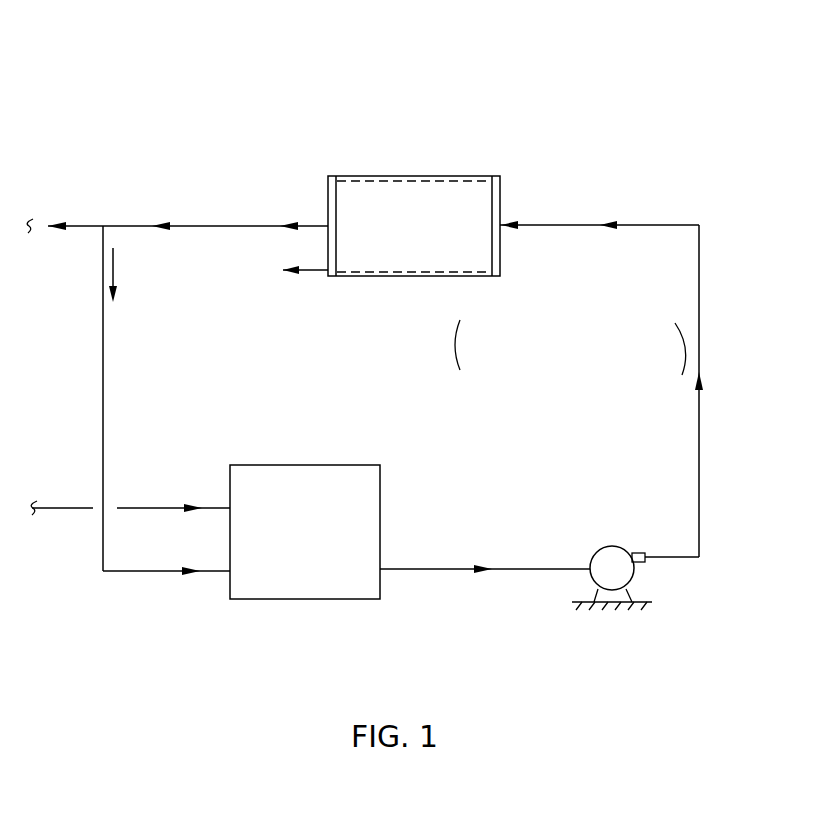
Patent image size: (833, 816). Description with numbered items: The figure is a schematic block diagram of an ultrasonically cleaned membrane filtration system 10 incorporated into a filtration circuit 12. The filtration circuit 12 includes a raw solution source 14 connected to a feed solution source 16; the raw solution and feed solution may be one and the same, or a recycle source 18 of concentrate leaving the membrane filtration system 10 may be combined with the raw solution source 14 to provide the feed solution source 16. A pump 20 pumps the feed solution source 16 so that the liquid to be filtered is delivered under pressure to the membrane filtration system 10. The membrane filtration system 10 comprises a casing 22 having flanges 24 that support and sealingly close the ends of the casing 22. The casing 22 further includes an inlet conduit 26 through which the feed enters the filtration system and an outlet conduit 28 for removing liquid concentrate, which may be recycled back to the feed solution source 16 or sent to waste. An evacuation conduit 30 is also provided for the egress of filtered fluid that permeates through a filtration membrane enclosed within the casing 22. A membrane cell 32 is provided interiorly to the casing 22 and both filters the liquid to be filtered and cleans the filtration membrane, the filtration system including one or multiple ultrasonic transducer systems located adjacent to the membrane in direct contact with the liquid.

The ultrasonically cleaned membrane filtration system 10 is at (494, 246).
The filtration circuit 12 is at (742, 114).
The raw solution source 14 is at (130, 484).
The feed solution source 16 is at (225, 592).
The recycle source 18 is at (110, 398).
The pump 20 is at (593, 550).
The casing 22 is at (378, 176).
The flanges 24 is at (330, 176).
The inlet conduit 26 is at (521, 230).
The outlet conduit 28 is at (302, 222).
The evacuation conduit 30 is at (309, 276).
The membrane cell 32 is at (427, 182).